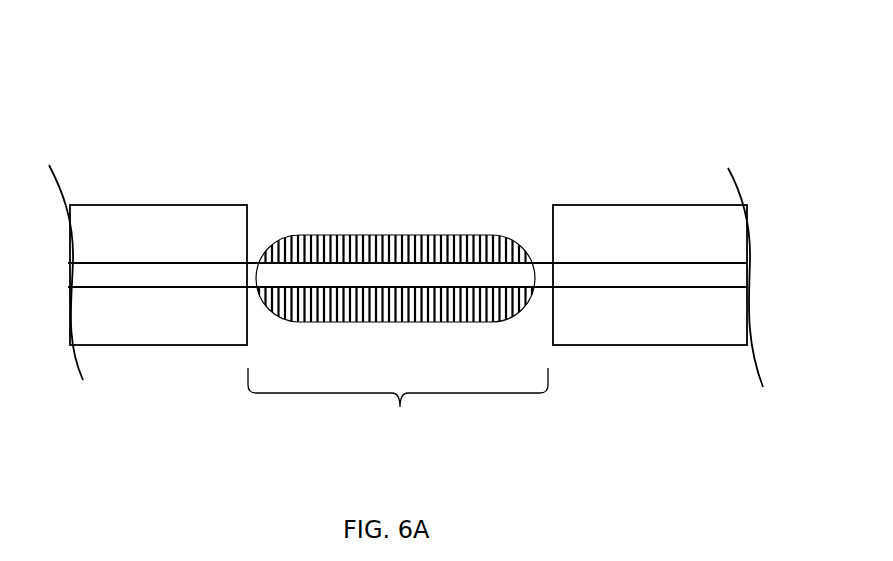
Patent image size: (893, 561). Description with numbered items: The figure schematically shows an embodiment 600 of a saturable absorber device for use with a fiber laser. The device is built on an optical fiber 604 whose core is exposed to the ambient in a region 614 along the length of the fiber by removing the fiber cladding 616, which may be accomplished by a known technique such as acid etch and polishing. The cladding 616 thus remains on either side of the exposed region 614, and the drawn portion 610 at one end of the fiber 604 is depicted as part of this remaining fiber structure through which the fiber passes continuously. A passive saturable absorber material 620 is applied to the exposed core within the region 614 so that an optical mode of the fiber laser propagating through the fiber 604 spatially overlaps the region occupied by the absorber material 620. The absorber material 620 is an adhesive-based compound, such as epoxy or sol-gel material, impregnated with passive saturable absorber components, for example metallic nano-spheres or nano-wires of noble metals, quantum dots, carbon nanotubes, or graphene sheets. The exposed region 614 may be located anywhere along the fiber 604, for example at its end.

The saturable absorber device embodiment 600 is at (550, 95).
The optical fiber 604 is at (657, 373).
The first tubing segment / connector body 610 is at (105, 220).
The exposed region 614 is at (398, 414).
The fiber cladding 616 is at (155, 272).
The passive saturable absorber material 620 is at (333, 238).